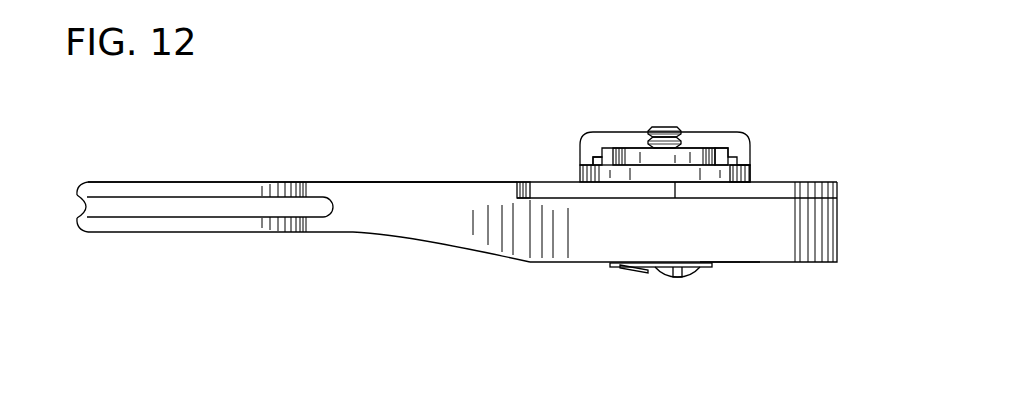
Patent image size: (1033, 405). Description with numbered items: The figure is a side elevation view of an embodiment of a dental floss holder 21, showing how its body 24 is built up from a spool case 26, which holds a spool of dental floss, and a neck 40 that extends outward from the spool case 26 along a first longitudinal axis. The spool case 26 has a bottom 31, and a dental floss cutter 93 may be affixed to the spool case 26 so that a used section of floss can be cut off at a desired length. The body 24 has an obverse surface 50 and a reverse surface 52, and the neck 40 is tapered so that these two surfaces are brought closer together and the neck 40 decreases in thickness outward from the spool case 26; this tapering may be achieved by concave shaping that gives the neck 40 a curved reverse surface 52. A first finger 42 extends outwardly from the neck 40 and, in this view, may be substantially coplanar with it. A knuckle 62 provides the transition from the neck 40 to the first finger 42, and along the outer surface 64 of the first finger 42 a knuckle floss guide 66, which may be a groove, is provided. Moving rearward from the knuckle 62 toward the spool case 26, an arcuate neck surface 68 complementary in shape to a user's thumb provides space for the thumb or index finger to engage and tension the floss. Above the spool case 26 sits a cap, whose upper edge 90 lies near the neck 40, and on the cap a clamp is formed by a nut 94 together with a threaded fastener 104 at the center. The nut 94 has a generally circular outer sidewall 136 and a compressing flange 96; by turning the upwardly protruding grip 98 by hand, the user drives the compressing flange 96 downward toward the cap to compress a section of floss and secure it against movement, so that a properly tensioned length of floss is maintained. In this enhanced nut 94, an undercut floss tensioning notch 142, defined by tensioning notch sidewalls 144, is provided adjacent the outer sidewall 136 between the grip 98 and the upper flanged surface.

The dental floss holder 21 is at (357, 92).
The first finger 42 is at (158, 182).
The knuckle floss guide 66 is at (132, 203).
The outer surface of first finger 64 is at (160, 233).
The knuckle 62 is at (295, 233).
The obverse surface 50 is at (352, 182).
The neck 40 is at (428, 182).
The reverse surface 52 is at (353, 233).
The arcuate neck surface 68 is at (430, 197).
The upper edge of the cap 90 is at (512, 190).
The body 24 is at (530, 262).
The spool case 26 is at (735, 235).
The bottom 31 is at (720, 263).
The outer sidewall 136 is at (578, 168).
The nut 94 is at (757, 172).
The grip 98 is at (732, 138).
The undercut floss tensioning notch 142 is at (600, 158).
The tensioning notch sidewalls 144 is at (578, 160).
The compressing flange 96 is at (727, 167).
The threaded fastener 104 is at (663, 127).
The dental floss cutter 93 is at (635, 268).